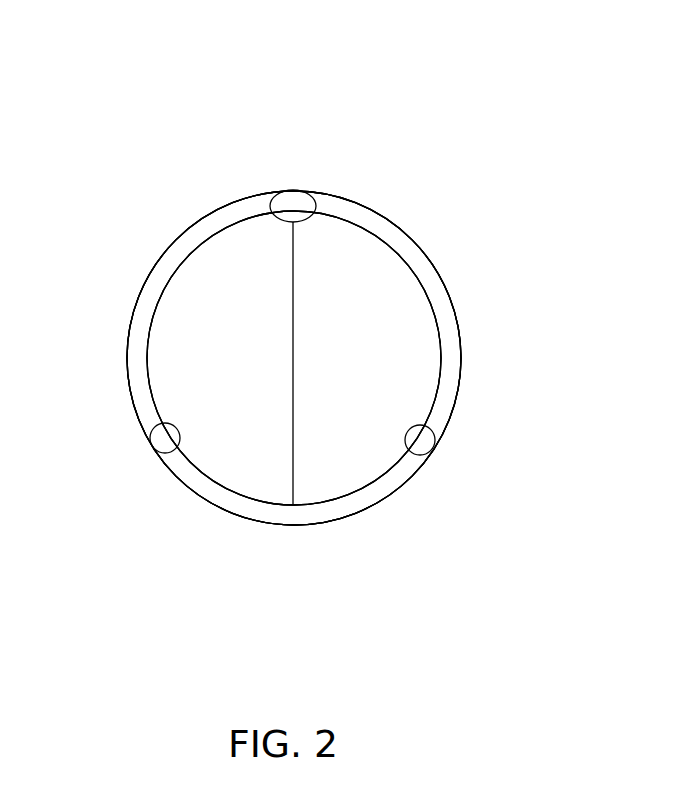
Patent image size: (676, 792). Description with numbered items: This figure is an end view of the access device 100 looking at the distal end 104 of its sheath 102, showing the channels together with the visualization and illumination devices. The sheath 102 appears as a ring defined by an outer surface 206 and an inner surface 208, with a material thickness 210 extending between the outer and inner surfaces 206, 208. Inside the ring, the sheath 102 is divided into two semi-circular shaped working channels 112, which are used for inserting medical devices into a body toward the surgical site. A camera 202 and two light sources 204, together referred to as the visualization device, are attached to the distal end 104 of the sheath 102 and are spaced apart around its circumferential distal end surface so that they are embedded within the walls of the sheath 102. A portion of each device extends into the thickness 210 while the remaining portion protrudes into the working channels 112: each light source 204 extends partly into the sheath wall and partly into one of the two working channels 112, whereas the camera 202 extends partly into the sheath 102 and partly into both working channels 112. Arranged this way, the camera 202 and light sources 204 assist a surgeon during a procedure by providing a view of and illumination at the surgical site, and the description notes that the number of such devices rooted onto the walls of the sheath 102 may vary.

The access device 100 is at (500, 68).
The sheath 102 is at (223, 181).
The distal end 104 is at (130, 378).
The working channels 112 is at (175, 323).
The camera 202 is at (308, 191).
The light sources 204 is at (148, 430).
The outer surface 206 is at (448, 295).
The inner surface 208 is at (440, 335).
The material thickness 210 is at (180, 248).